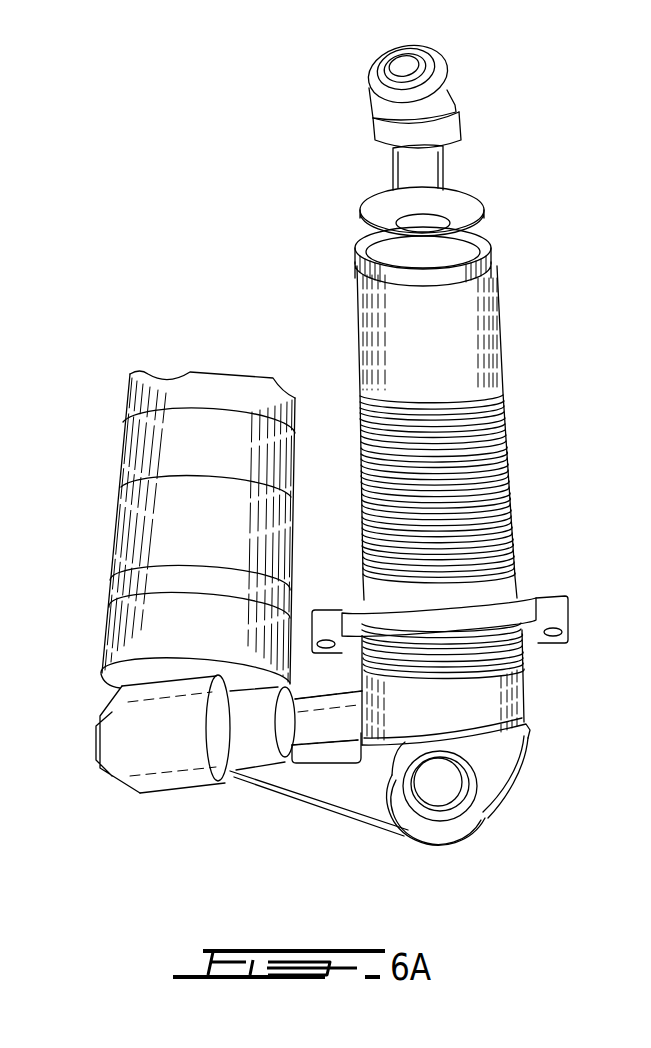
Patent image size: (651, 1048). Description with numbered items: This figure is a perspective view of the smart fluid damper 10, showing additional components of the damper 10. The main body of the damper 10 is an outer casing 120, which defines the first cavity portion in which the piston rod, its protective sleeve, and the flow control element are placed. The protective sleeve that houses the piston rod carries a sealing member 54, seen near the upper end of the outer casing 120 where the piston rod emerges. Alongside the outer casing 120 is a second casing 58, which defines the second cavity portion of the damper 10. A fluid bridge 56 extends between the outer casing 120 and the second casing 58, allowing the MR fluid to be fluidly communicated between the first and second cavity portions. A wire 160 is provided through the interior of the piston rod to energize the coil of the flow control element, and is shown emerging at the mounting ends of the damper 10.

The damper 10 is at (260, 183).
The sealing member 54 is at (490, 252).
The fluid bridge 56 is at (370, 702).
The second casing 58 is at (122, 516).
The outer casing 120 is at (484, 373).
The wire 160 is at (450, 62).